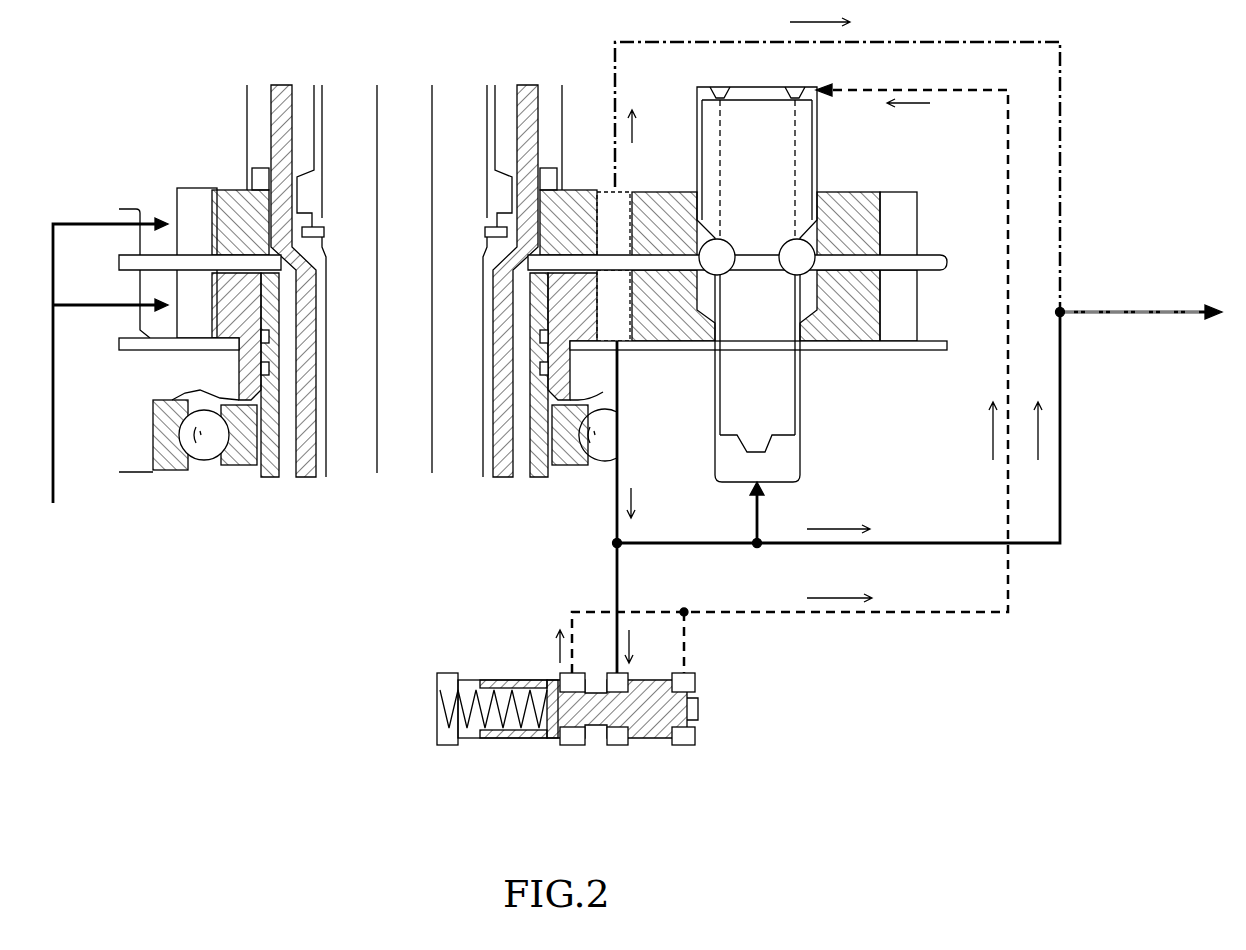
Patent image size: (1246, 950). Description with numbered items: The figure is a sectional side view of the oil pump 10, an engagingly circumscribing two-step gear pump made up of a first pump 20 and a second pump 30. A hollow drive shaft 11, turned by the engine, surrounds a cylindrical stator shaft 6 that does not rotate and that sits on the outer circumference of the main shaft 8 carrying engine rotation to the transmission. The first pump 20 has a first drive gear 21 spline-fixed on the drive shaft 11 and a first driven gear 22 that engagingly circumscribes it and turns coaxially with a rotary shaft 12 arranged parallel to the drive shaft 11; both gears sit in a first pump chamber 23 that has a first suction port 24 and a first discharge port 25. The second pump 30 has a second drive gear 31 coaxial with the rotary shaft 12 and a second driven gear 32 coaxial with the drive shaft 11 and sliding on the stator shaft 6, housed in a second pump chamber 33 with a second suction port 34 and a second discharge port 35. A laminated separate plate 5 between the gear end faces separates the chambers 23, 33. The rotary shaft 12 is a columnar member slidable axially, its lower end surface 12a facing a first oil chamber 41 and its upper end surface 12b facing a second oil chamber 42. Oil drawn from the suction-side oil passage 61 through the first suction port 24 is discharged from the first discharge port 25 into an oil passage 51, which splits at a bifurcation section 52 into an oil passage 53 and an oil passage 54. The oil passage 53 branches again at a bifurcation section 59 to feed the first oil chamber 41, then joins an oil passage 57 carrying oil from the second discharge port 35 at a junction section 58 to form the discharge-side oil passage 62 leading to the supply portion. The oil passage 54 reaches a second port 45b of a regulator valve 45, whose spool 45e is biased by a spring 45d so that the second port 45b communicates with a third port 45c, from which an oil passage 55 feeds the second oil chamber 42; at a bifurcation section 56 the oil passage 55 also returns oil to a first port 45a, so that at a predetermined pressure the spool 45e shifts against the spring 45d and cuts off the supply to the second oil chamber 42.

The laminated separate plate 5 is at (943, 255).
The stator shaft 6 is at (500, 450).
The main shaft 8 is at (352, 455).
The oil pump 10 is at (972, 232).
The drive shaft 11 is at (540, 452).
The rotary shaft 12 is at (783, 410).
The end surface 12a is at (733, 440).
The end surface 12b is at (712, 88).
The first pump 20 is at (937, 325).
The first drive gear 21 is at (220, 343).
The first driven gear 22 is at (857, 342).
The first pump chamber 23 is at (925, 335).
The first suction port 24 is at (158, 320).
The first discharge port 25 is at (620, 345).
The second pump 30 is at (947, 205).
The second drive gear 31 is at (858, 188).
The second driven gear 32 is at (225, 190).
The second pump chamber 33 is at (925, 202).
The second suction port 34 is at (155, 214).
The second discharge port 35 is at (613, 188).
The first oil chamber 41 is at (795, 467).
The second oil chamber 42 is at (795, 90).
The regulator valve 45 is at (398, 712).
The first port 45a is at (693, 673).
The second port 45b is at (633, 673).
The third port 45c is at (563, 673).
The spring 45d is at (462, 728).
The spool 45e is at (648, 737).
The oil passage 51 is at (618, 440).
The bifurcation section 52 is at (617, 543).
The oil passage 53 is at (680, 545).
The oil passage 54 is at (617, 578).
The oil passage 55 is at (862, 612).
The bifurcation section 56 is at (684, 612).
The oil passage 57 is at (1060, 75).
The junction section 58 is at (1060, 312).
The bifurcation section 59 is at (757, 543).
The oil passage 61 is at (53, 470).
The oil passage 62 is at (1160, 315).